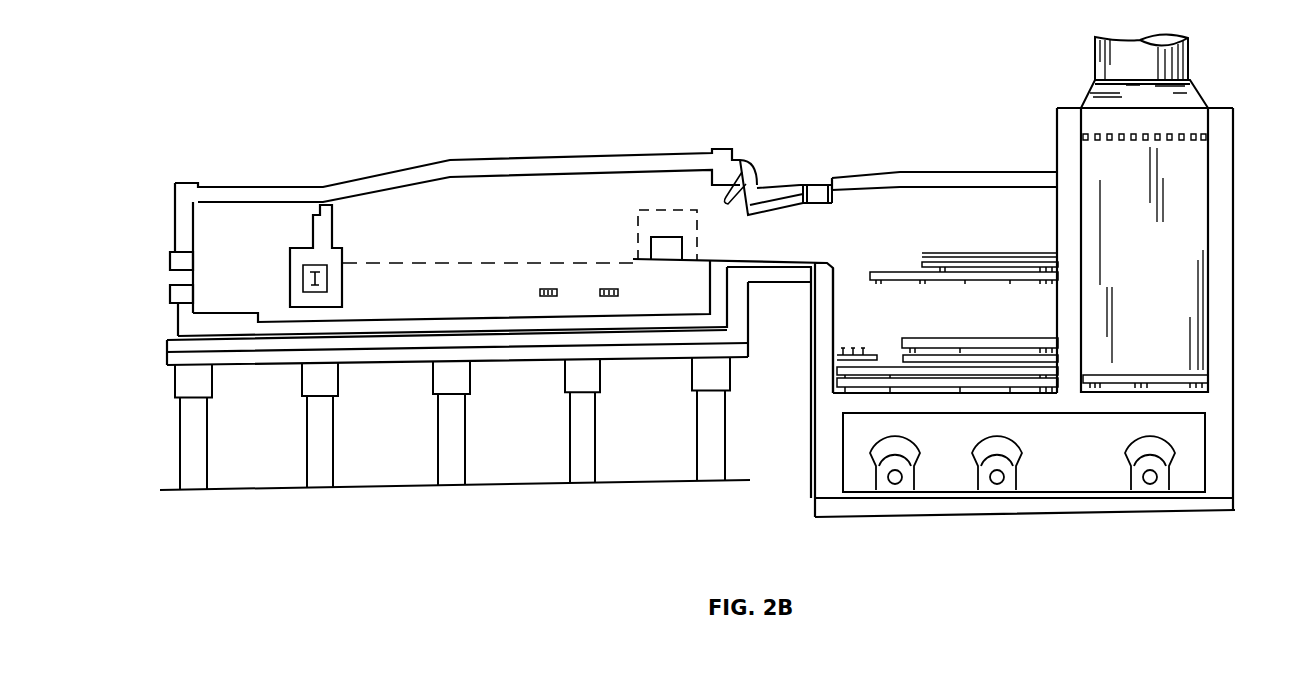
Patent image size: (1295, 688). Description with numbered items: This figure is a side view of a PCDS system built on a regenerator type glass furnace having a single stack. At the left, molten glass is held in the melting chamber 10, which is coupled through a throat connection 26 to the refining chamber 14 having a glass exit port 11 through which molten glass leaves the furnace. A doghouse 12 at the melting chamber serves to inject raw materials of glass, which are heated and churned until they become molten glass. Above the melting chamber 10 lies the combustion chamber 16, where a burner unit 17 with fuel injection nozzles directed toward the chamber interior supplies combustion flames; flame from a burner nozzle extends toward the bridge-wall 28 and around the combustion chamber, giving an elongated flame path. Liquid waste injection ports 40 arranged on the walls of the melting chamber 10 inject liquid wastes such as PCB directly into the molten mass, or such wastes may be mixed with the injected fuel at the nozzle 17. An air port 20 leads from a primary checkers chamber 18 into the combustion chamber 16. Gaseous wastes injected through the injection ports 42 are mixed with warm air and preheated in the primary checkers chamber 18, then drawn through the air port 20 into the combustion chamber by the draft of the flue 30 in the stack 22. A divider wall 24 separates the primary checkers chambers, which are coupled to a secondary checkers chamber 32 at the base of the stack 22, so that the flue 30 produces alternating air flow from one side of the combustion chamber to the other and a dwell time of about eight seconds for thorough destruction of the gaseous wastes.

The melting chamber 10 is at (452, 298).
The glass exit port 11 is at (168, 280).
The doghouse 12 is at (666, 204).
The refining chamber 14 is at (218, 259).
The combustion chamber 16 is at (457, 185).
The burner unit 17 is at (742, 162).
The primary checkers chamber 18 is at (945, 282).
The air port opening 20 is at (733, 368).
The stack 22 is at (1210, 253).
The divider wall 24 is at (835, 258).
The throat connection 26 is at (300, 318).
The bridge-wall 28 is at (340, 232).
The flue 30 is at (1208, 130).
The secondary checkers chamber 32 is at (1190, 381).
The liquid waste injection port 40 is at (538, 291).
The gaseous waste injection port 42 is at (1128, 484).